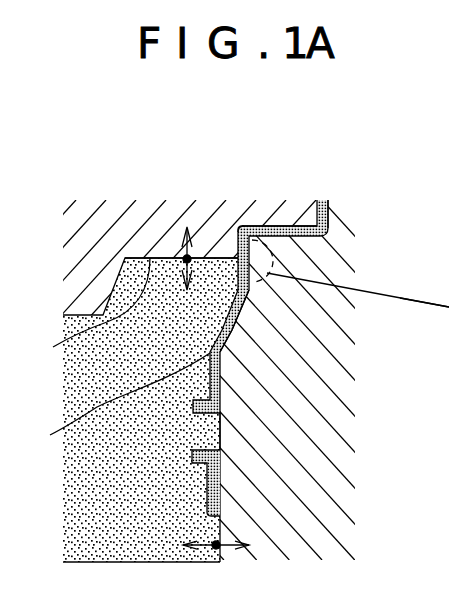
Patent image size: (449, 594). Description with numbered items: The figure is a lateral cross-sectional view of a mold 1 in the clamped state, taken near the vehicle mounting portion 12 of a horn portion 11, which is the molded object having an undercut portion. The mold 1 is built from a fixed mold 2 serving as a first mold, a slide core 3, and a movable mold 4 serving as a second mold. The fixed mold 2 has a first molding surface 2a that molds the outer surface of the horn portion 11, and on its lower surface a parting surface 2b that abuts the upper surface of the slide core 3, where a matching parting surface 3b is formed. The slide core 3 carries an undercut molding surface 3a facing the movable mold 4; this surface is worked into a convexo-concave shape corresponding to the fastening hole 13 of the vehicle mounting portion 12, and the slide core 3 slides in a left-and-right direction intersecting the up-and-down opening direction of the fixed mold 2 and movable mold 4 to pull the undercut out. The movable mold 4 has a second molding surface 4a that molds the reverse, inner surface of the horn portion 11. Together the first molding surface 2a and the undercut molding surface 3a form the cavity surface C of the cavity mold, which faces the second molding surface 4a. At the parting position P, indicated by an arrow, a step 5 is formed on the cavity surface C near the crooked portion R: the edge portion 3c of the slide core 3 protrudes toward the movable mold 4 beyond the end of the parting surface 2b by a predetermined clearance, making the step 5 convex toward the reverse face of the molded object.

The mold 1 is at (378, 172).
The fixed mold 2 is at (132, 247).
The first molding surface 2a is at (280, 226).
The parting surface 2b is at (165, 258).
The slide core 3 is at (138, 381).
The undercut molding surface 3a is at (220, 395).
The parting surface 3b is at (53, 347).
The edge portion 3c is at (256, 446).
The movable mold 4 is at (306, 425).
The second molding surface 4a is at (222, 364).
The step 5 is at (424, 355).
The horn portion 11 is at (329, 228).
The vehicle mounting portion 12 is at (220, 382).
The fastening hole 13 is at (220, 452).
The crooked portion R is at (239, 224).
The parting position P is at (244, 258).
The cavity surface C is at (120, 400).